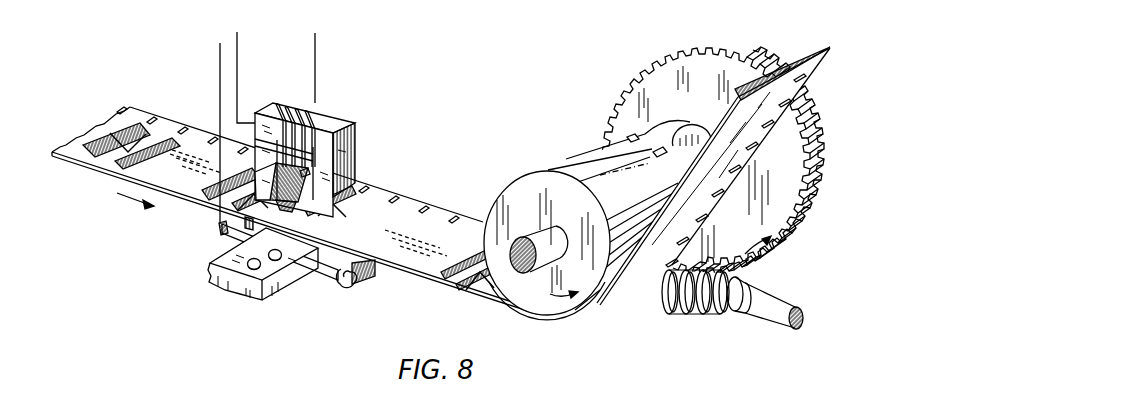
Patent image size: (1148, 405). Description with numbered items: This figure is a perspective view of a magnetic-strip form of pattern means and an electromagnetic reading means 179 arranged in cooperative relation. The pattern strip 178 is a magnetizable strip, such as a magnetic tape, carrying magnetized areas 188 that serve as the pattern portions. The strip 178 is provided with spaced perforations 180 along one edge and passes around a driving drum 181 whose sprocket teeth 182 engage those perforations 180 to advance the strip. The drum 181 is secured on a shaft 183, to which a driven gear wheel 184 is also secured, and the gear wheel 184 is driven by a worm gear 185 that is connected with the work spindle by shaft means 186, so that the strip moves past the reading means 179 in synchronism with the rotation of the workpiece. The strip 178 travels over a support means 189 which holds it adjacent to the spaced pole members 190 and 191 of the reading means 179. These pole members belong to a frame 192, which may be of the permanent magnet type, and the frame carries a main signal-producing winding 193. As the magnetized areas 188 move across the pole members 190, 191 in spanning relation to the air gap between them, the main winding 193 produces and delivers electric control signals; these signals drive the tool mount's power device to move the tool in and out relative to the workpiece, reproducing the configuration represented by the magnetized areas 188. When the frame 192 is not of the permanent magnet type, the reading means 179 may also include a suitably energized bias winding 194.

The pattern strip 178 is at (430, 266).
The reading means 179 is at (310, 137).
The perforations 180 is at (390, 197).
The driving drum 181 is at (596, 219).
The sprocket teeth 182 is at (655, 148).
The shaft 183 is at (534, 305).
The driven gear wheel 184 is at (747, 50).
The worm gear 185 is at (685, 308).
The shaft means 186 is at (766, 318).
The magnetized areas 188 is at (343, 198).
The support means 189 is at (240, 242).
The pole member 190 is at (214, 218).
The pole member 191 is at (313, 208).
The frame 192 is at (349, 124).
The main signal-producing winding 193 is at (318, 107).
The bias winding 194 is at (254, 118).